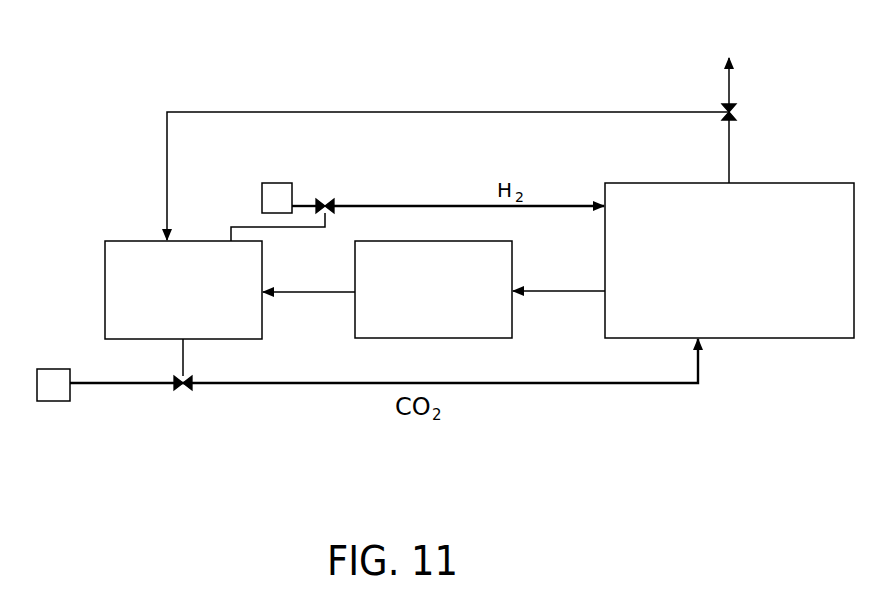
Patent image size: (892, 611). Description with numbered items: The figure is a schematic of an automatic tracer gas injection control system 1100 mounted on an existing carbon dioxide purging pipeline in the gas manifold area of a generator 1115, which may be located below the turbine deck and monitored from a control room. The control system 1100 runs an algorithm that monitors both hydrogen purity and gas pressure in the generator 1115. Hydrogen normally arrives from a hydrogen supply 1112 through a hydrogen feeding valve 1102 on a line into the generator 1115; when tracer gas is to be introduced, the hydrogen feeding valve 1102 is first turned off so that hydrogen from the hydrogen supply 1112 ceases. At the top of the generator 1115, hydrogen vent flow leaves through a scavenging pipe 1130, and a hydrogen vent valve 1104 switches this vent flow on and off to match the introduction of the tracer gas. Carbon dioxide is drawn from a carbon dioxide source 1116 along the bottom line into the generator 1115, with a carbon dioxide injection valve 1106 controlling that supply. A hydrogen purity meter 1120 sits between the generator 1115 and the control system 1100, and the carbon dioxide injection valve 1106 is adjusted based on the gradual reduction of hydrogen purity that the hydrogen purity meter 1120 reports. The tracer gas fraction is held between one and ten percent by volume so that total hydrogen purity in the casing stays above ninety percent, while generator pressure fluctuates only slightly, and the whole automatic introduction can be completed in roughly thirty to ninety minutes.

The automatic tracer gas injection control system 1100 is at (157, 302).
The hydrogen feeding valve 1102 is at (327, 198).
The hydrogen vent valve 1104 is at (737, 113).
The carbon dioxide injection valve 1106 is at (185, 395).
The hydrogen supply 1112 is at (263, 183).
The generator 1115 is at (755, 272).
The carbon dioxide source 1116 is at (53, 401).
The hydrogen purity meter 1120 is at (407, 303).
The scavenging pipe 1130 is at (723, 87).